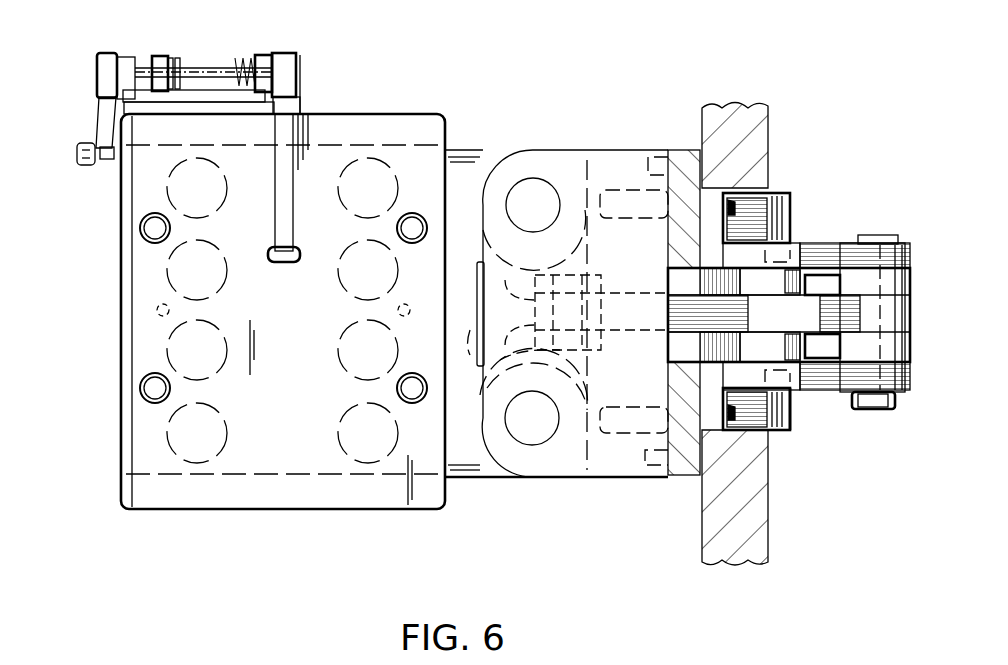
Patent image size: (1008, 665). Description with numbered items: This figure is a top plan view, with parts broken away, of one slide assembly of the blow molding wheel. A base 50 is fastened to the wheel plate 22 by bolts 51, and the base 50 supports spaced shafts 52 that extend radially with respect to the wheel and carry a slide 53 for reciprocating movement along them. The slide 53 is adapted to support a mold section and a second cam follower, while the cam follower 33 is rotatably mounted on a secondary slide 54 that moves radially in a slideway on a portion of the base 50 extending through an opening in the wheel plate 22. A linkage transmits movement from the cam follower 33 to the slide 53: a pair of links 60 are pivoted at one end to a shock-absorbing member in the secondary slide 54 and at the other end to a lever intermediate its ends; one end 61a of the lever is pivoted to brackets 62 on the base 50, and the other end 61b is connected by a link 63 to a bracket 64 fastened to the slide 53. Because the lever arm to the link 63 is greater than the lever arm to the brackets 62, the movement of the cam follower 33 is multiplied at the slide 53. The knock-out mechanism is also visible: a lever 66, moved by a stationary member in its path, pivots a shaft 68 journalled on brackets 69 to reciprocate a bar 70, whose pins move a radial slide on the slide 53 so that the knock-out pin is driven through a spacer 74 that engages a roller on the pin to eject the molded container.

The wheel plate 22 is at (748, 137).
The cam follower 33 is at (838, 402).
The base 50 is at (688, 180).
The bolts 51 is at (657, 482).
The shafts 52 is at (534, 200).
The slide 53 is at (389, 492).
The secondary slide 54 is at (771, 430).
The links 60 is at (753, 345).
The end of lever 61a is at (878, 312).
The end of lever 61b is at (559, 378).
The brackets 62 is at (803, 242).
The link 63 is at (604, 280).
The bracket 64 is at (475, 322).
The lever 66 is at (101, 108).
The shaft 68 is at (226, 64).
The brackets 69 is at (260, 55).
The bar 70 is at (294, 106).
The spacer 74 is at (287, 226).